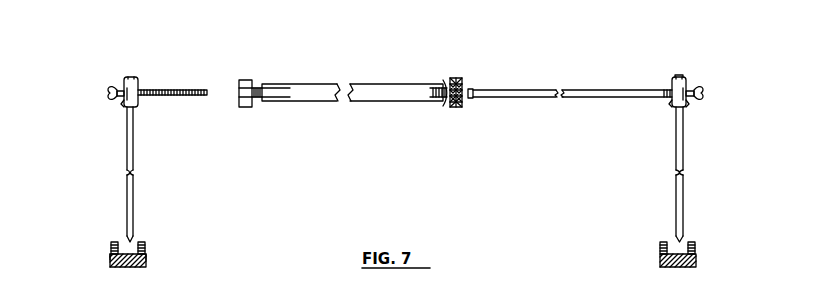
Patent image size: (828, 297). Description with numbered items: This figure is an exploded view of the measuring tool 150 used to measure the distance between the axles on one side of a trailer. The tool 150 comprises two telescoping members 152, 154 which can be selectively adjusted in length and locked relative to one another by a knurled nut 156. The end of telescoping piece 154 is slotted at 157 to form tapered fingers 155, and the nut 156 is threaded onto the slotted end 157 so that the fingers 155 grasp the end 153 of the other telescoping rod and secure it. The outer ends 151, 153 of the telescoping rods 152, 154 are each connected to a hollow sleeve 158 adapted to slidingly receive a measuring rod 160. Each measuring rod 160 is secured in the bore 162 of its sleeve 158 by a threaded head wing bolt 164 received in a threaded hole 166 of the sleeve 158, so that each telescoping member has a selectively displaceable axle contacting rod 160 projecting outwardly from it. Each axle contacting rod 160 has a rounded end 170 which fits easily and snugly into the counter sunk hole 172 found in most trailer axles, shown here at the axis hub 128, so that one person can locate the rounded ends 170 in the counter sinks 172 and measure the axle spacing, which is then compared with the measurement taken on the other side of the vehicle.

The measuring tool 150 is at (498, 64).
The outer end of telescoping rod 151 is at (669, 104).
The telescoping member 152 is at (542, 98).
The end of telescoping rod 153 is at (260, 76).
The telescoping member 154 is at (328, 85).
The fingers 155 is at (441, 98).
The knurled nut 156 is at (456, 108).
The slotted end 157 is at (441, 86).
The hollow sleeve 158 is at (129, 77).
The measuring rod 160 is at (133, 148).
The bore 162 is at (677, 76).
The threaded head wing bolt 164 is at (109, 93).
The threaded hole 166 is at (124, 105).
The rounded end 170 is at (126, 241).
The counter sunk hole 172 is at (137, 253).
The axis hub 128 is at (111, 249).